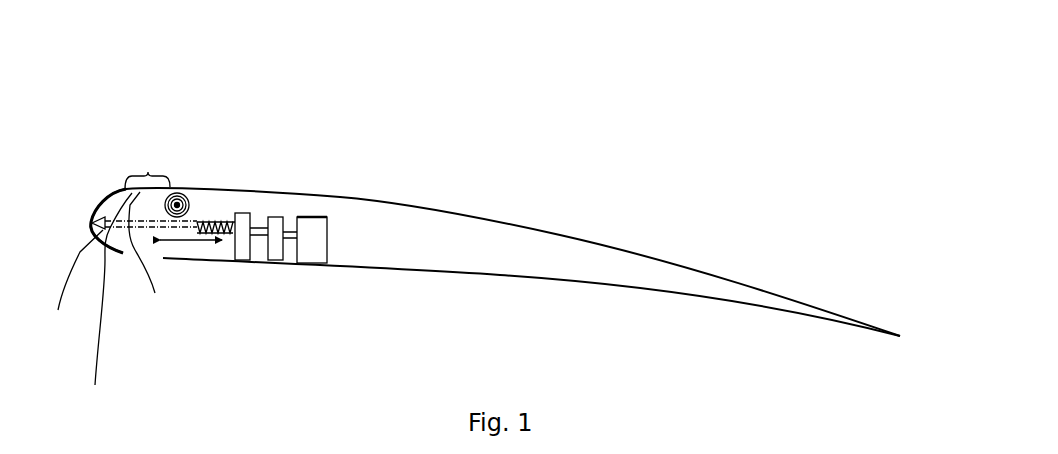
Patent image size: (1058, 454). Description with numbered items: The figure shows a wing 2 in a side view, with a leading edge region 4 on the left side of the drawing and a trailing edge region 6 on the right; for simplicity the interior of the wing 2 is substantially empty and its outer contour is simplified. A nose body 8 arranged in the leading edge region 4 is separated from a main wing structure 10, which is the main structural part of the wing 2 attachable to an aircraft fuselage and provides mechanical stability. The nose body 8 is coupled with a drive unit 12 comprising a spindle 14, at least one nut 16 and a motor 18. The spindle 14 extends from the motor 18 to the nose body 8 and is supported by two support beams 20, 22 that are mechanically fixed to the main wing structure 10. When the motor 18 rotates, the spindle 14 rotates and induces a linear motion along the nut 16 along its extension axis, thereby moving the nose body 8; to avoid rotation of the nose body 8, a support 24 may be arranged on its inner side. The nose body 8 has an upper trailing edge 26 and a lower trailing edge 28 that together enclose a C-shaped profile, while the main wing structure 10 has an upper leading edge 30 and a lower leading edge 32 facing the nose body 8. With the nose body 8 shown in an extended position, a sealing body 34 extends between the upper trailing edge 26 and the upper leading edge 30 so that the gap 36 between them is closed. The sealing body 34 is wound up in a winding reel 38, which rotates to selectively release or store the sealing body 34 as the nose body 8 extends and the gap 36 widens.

The wing 2 is at (660, 65).
The leading edge region 4 is at (180, 102).
The trailing edge region 6 is at (897, 159).
The nose body 8 is at (100, 204).
The main wing structure 10 is at (662, 102).
The drive unit 12 is at (248, 308).
The spindle 14 is at (108, 308).
The nut 16 is at (250, 228).
The motor 18 is at (317, 245).
The support beam 20 is at (240, 260).
The support beam 22 is at (277, 247).
The support 24 is at (75, 289).
The upper trailing edge 26 is at (123, 181).
The lower trailing edge 28 is at (125, 268).
The upper leading edge 30 is at (171, 180).
The lower leading edge 32 is at (167, 265).
The sealing body 34 is at (151, 260).
The gap 36 is at (147, 167).
The winding reel 38 is at (198, 190).